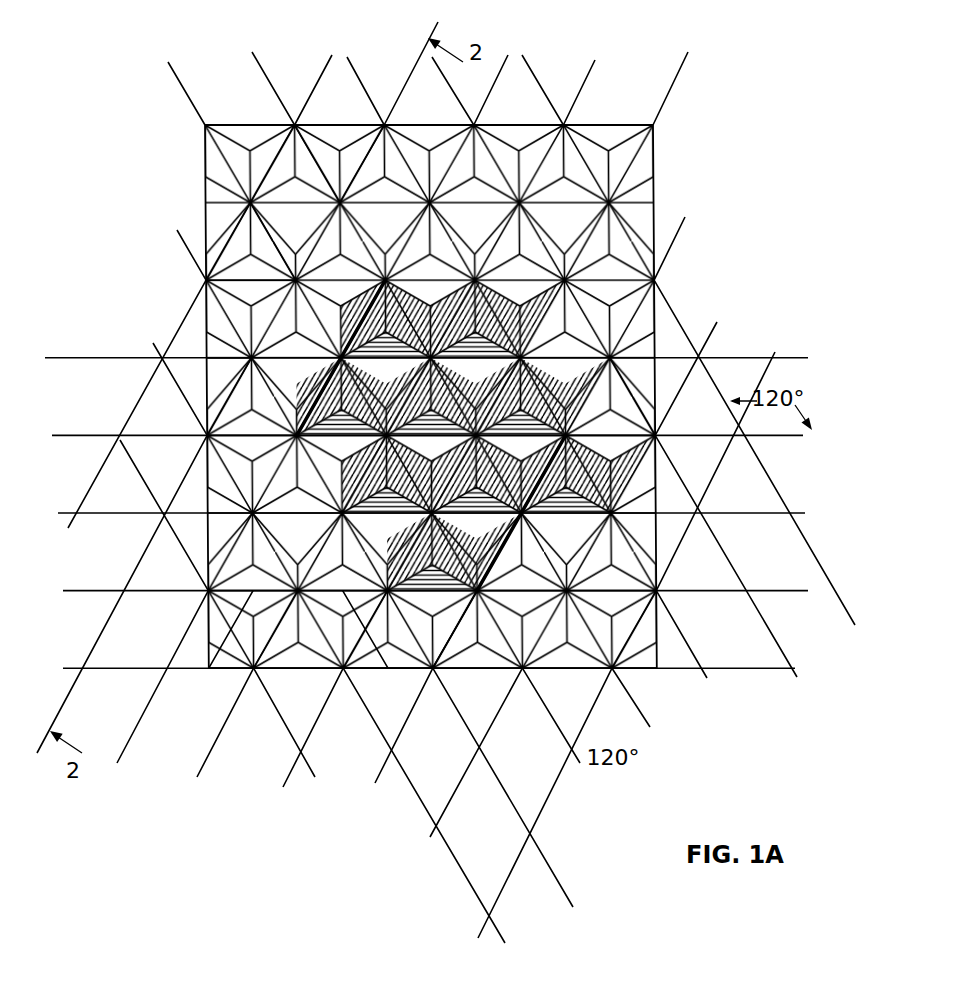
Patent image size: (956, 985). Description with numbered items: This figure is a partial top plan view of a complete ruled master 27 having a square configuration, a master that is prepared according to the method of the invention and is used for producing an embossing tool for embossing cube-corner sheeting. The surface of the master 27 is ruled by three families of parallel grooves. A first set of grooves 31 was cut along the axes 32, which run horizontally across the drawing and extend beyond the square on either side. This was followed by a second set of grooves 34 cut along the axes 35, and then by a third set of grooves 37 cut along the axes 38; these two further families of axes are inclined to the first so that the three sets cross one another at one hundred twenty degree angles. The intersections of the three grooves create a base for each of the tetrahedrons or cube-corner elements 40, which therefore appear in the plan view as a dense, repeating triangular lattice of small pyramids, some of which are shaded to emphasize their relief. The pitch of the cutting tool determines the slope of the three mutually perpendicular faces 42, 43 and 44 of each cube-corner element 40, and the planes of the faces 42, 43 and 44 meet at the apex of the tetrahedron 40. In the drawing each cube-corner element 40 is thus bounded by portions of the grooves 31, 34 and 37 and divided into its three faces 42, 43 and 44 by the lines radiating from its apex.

The ruled master 27 is at (605, 115).
The first set of grooves 31 is at (684, 297).
The axes 32 is at (790, 350).
The second set of grooves 34 is at (227, 408).
The axes 35 is at (681, 232).
The third set of grooves 37 is at (262, 236).
The axes 38 is at (184, 90).
The cube-corner element 40 is at (461, 634).
The face 42 is at (310, 110).
The face 43 is at (365, 127).
The face 44 is at (277, 122).